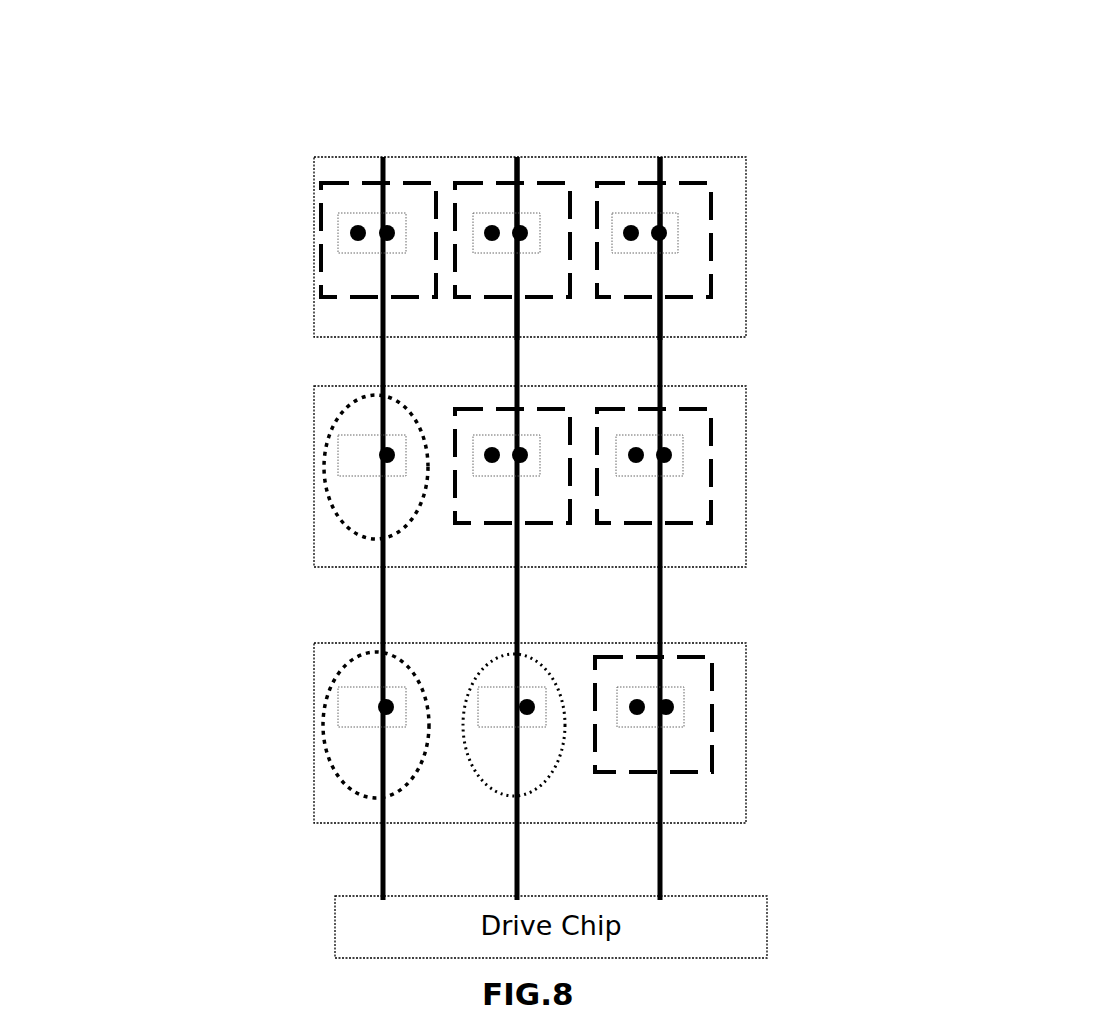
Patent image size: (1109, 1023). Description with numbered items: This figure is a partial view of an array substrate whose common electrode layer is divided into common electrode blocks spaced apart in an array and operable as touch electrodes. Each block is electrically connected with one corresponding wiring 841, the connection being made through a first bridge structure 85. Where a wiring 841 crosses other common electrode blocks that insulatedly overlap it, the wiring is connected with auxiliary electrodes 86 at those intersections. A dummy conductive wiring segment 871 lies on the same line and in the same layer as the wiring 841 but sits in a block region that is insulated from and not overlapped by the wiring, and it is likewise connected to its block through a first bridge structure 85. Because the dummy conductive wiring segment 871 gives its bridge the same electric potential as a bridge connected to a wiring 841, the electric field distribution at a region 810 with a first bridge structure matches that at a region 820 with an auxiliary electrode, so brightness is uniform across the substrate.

The wiring 841 is at (458, 528).
The dummy conductive wiring segment 871 is at (517, 157).
The region with the first bridge structure 810 is at (437, 297).
The first bridge structure 85 is at (476, 417).
The region with the auxiliary electrode 820 is at (497, 653).
The auxiliary electrode 86 is at (390, 560).